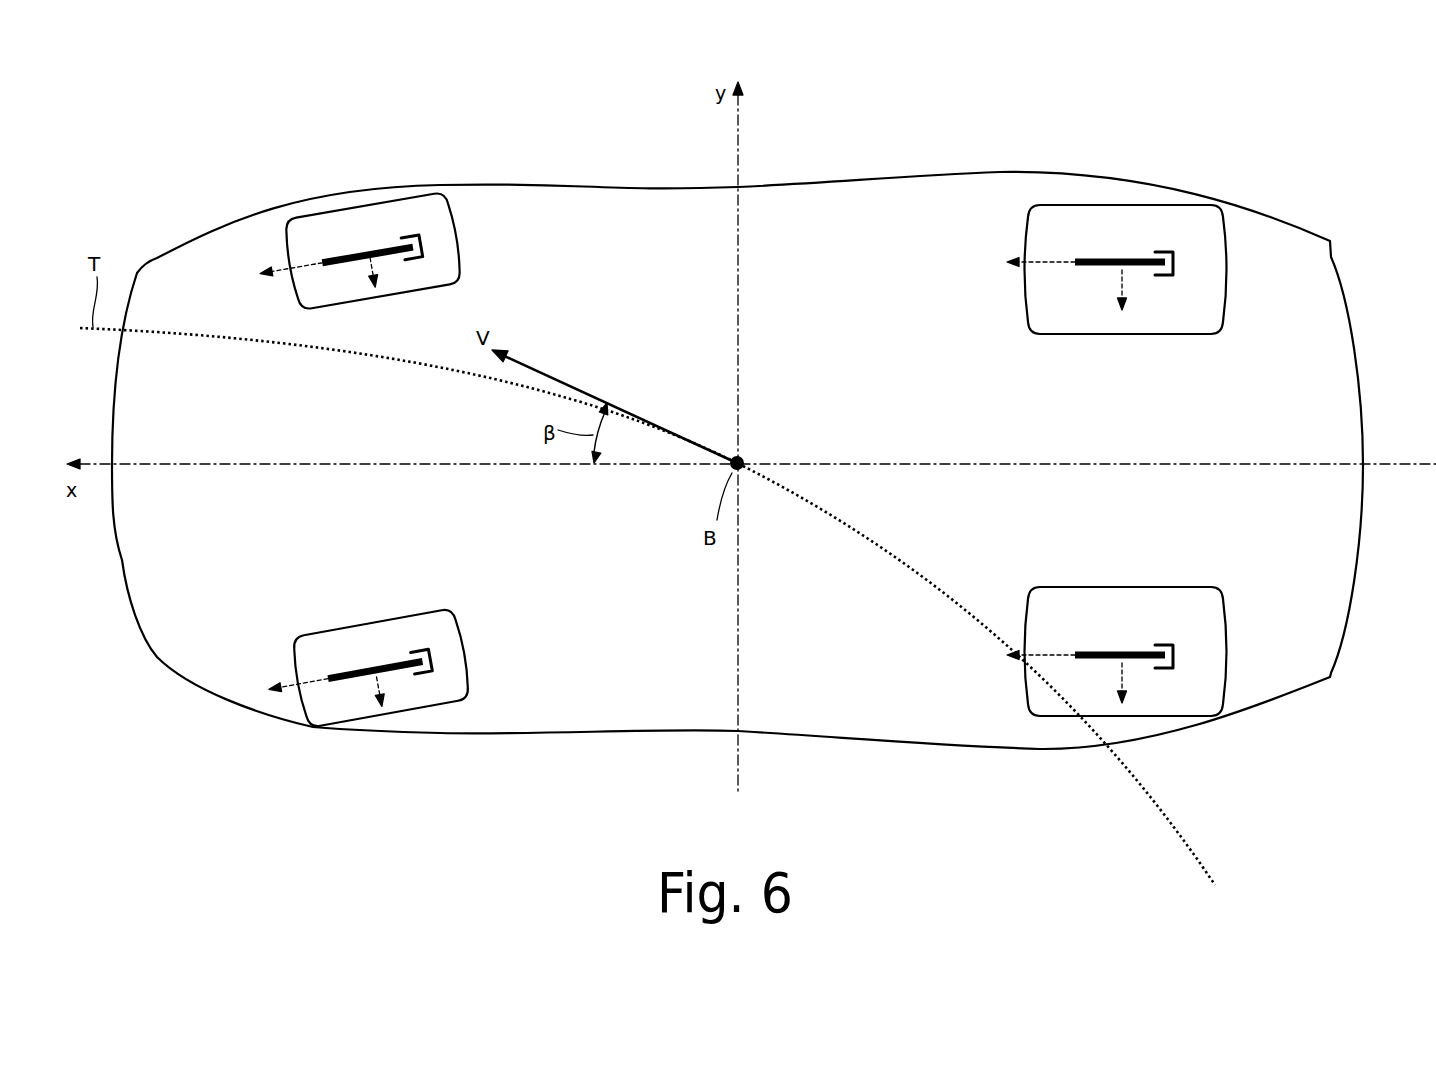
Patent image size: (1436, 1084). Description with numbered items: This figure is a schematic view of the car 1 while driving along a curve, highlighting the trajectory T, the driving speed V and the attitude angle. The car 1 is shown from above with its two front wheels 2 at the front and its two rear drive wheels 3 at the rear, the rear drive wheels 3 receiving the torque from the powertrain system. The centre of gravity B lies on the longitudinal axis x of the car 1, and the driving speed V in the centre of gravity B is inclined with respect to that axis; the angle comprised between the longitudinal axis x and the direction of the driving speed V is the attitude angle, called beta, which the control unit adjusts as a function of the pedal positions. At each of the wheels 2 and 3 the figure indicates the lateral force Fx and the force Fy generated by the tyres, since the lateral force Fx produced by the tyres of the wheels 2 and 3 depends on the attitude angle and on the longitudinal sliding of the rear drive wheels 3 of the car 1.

The car 1 is at (1310, 781).
The front wheels 2 is at (448, 218).
The rear drive wheels 3 is at (1205, 222).